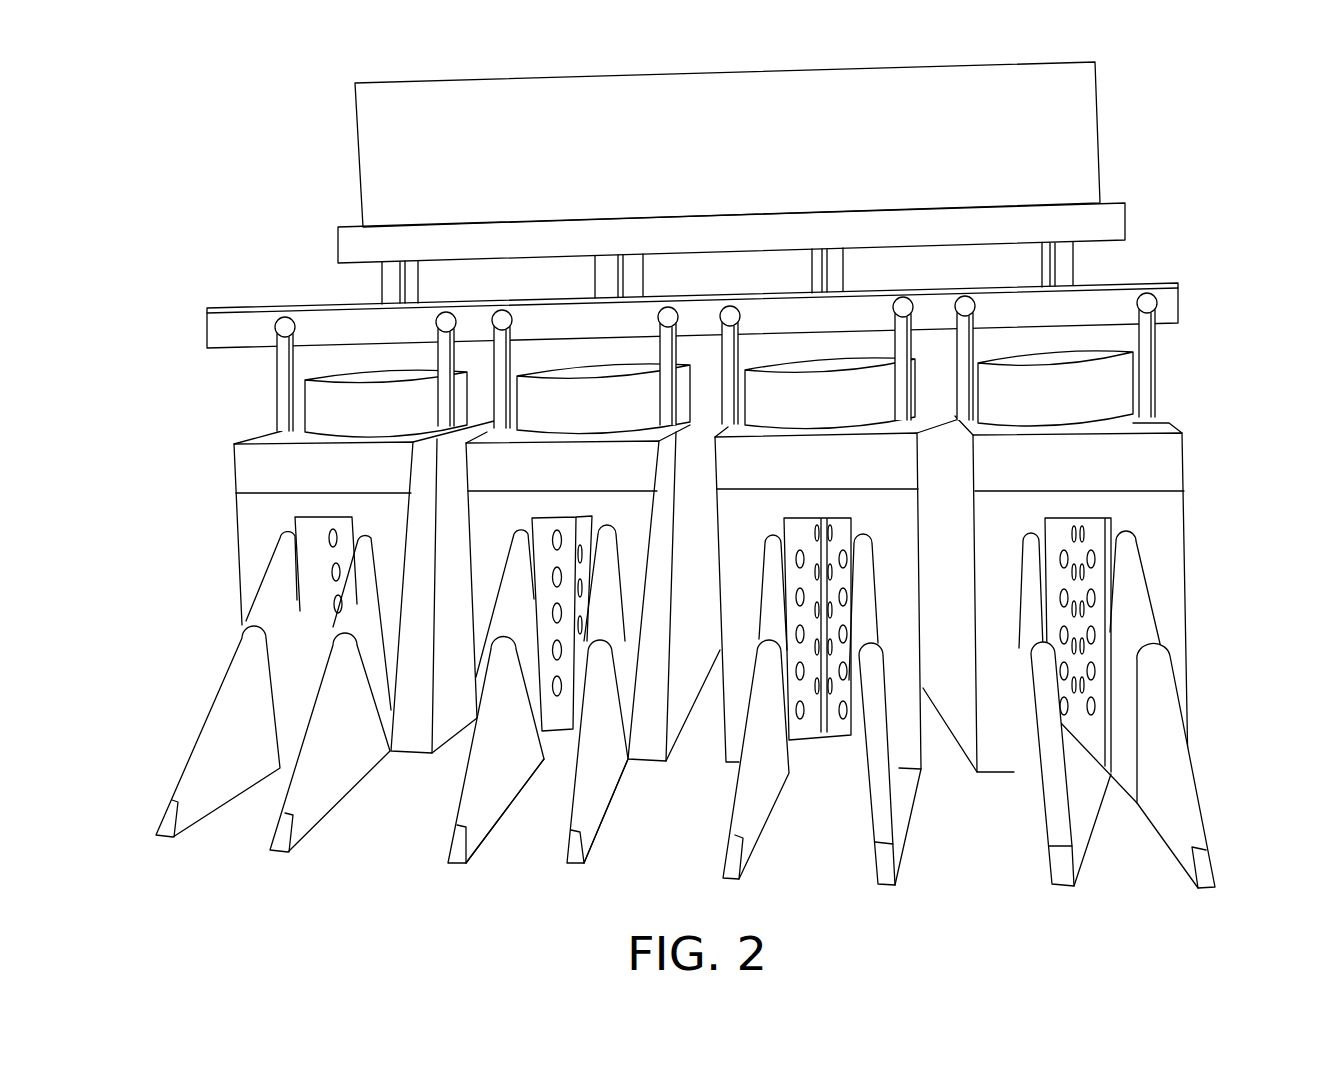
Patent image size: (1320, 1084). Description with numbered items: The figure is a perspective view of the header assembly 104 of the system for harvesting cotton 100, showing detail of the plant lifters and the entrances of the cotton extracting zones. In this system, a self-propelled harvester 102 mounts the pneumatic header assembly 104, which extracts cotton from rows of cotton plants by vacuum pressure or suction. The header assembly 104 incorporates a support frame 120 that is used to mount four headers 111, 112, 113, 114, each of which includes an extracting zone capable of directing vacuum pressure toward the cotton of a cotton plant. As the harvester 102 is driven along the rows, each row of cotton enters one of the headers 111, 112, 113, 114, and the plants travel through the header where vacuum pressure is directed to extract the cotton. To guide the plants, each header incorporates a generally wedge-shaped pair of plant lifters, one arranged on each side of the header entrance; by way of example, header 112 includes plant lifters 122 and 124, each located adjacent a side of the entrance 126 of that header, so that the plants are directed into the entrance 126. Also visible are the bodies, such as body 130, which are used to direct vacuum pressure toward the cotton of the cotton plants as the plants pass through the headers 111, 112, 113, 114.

The system for harvesting cotton 100 is at (695, 514).
The harvester 102 is at (326, 149).
The header assembly 104 is at (177, 380).
The header 111 is at (336, 465).
The header 112 is at (578, 463).
The header 113 is at (820, 458).
The header 114 is at (1079, 458).
The support frame 120 is at (1170, 303).
The plant lifter 122 is at (460, 800).
The plant lifter 124 is at (596, 803).
The entrance 126 is at (543, 793).
The body 130 is at (542, 527).